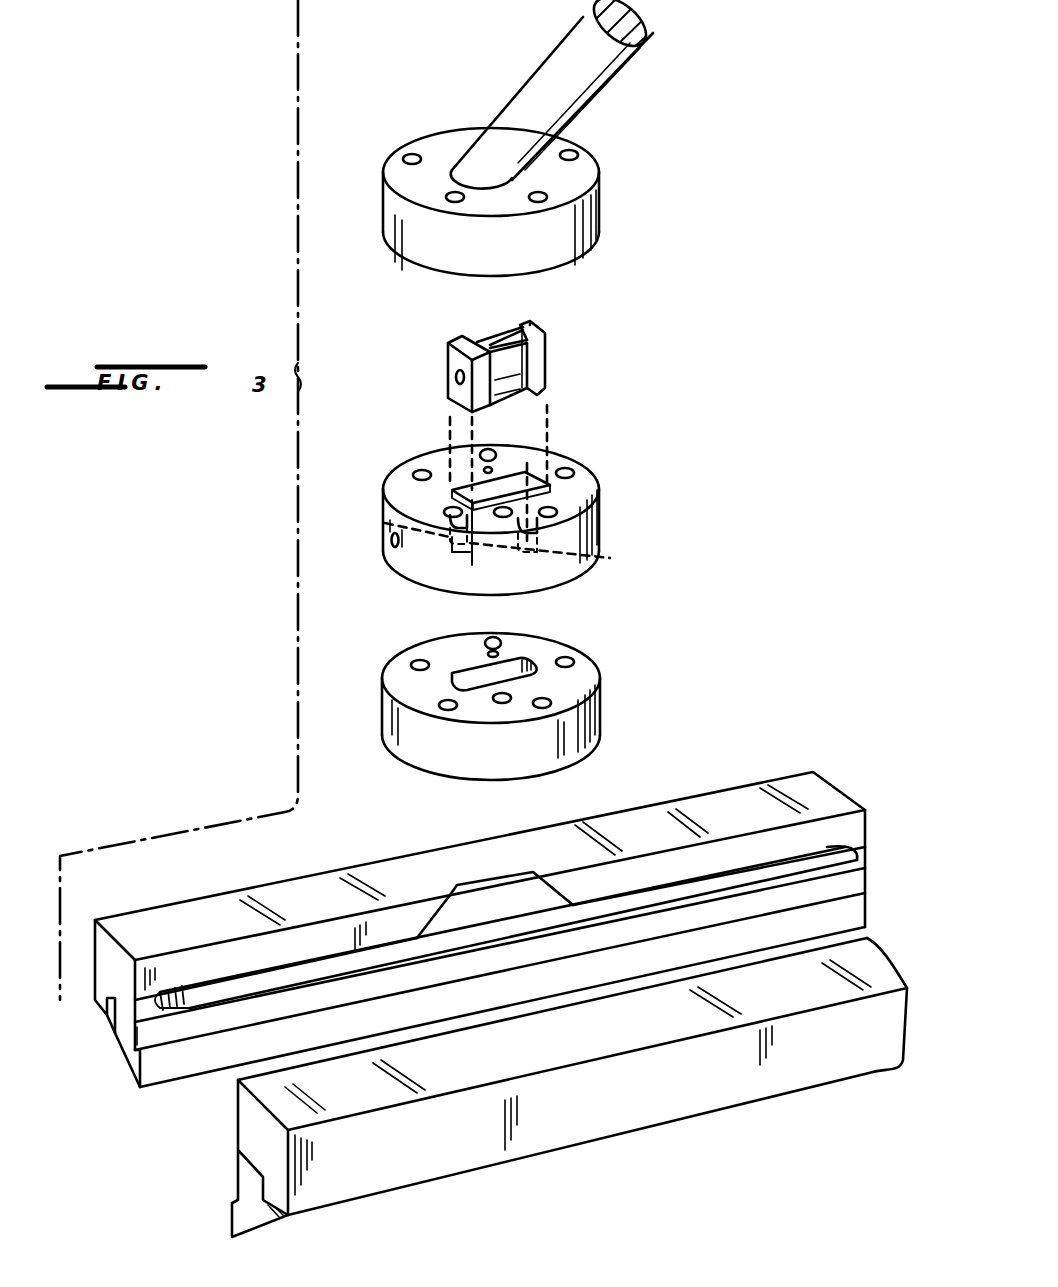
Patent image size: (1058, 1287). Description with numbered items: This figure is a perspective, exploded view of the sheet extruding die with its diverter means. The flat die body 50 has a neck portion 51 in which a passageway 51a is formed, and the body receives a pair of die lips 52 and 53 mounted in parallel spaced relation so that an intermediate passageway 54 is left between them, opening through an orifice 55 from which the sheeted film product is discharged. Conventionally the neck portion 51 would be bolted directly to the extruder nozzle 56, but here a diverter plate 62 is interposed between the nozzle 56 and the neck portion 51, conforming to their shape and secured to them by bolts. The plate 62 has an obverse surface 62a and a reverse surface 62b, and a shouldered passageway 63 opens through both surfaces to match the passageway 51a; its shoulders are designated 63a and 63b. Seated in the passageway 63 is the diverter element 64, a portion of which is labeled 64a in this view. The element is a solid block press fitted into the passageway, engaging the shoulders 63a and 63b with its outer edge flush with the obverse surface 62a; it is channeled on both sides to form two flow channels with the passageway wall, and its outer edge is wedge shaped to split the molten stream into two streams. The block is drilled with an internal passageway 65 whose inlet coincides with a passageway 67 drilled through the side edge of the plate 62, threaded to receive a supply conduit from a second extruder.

The die body 50 is at (690, 795).
The neck portion 51 is at (519, 693).
The passageway 51a is at (463, 673).
The die lip 52 is at (228, 1213).
The die lip 53 is at (128, 1060).
The intermediate passageway 54 is at (471, 945).
The orifice 55 is at (437, 917).
The extruder nozzle 56 is at (598, 80).
The diverter plate 62 is at (504, 515).
The obverse surface 62a is at (563, 458).
The reverse surface 62b is at (577, 570).
The shouldered passageway 63 is at (528, 477).
The passageway shoulder 63a is at (472, 563).
The passageway shoulder 63b is at (603, 560).
The diverter element 64 is at (474, 355).
The pin holes 64a is at (458, 490).
The internal passageway 65 is at (454, 381).
The passageway 67 is at (388, 541).